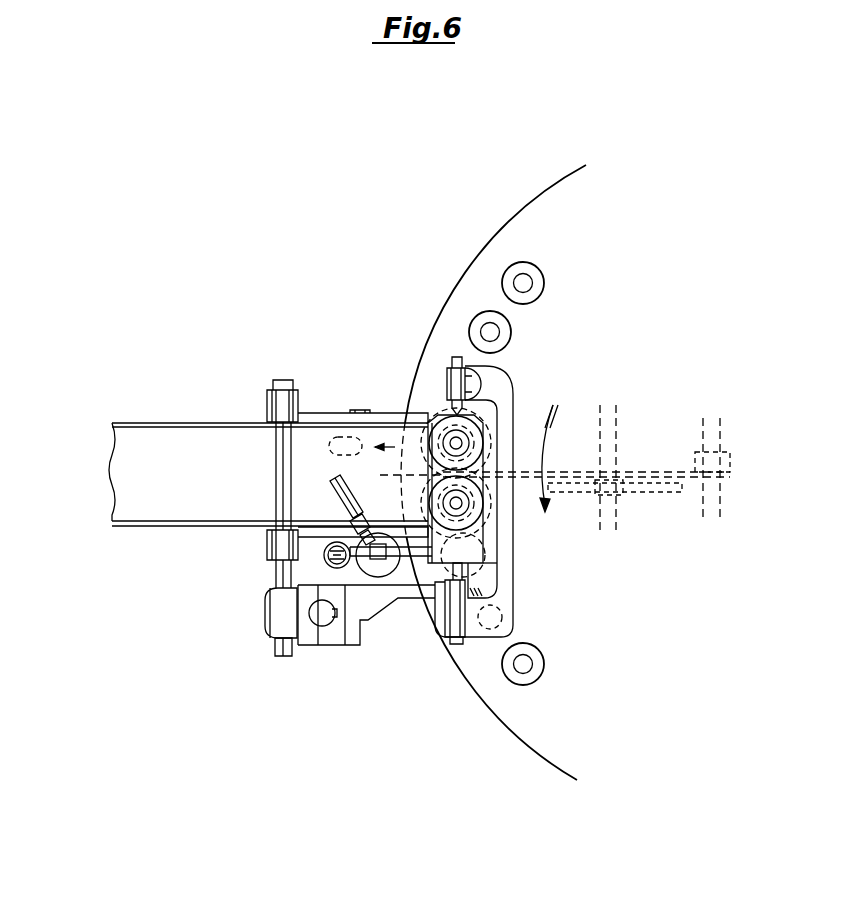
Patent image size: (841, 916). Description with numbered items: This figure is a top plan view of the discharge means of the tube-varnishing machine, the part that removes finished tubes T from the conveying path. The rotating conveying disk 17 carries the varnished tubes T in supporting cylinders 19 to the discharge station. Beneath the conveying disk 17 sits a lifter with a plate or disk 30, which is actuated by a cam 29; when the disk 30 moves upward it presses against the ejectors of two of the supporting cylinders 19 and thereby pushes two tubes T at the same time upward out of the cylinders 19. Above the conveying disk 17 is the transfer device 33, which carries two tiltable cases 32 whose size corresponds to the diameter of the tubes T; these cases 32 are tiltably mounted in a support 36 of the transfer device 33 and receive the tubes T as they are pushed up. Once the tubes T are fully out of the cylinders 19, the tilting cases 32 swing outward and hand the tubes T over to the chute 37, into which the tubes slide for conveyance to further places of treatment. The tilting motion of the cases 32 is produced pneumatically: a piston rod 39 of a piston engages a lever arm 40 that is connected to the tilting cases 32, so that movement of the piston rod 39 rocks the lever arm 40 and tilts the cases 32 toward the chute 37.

The conveying disk 17 is at (443, 318).
The supporting cylinders 19 is at (545, 270).
The cam 29 is at (665, 495).
The plate or disk 30 is at (396, 473).
The tiltable cases 32 is at (467, 428).
The transfer device 33 is at (525, 590).
The support 36 is at (510, 550).
The chute 37 is at (178, 432).
The piston rod 39 is at (378, 560).
The lever arm 40 is at (402, 522).
The tubes T is at (343, 435).